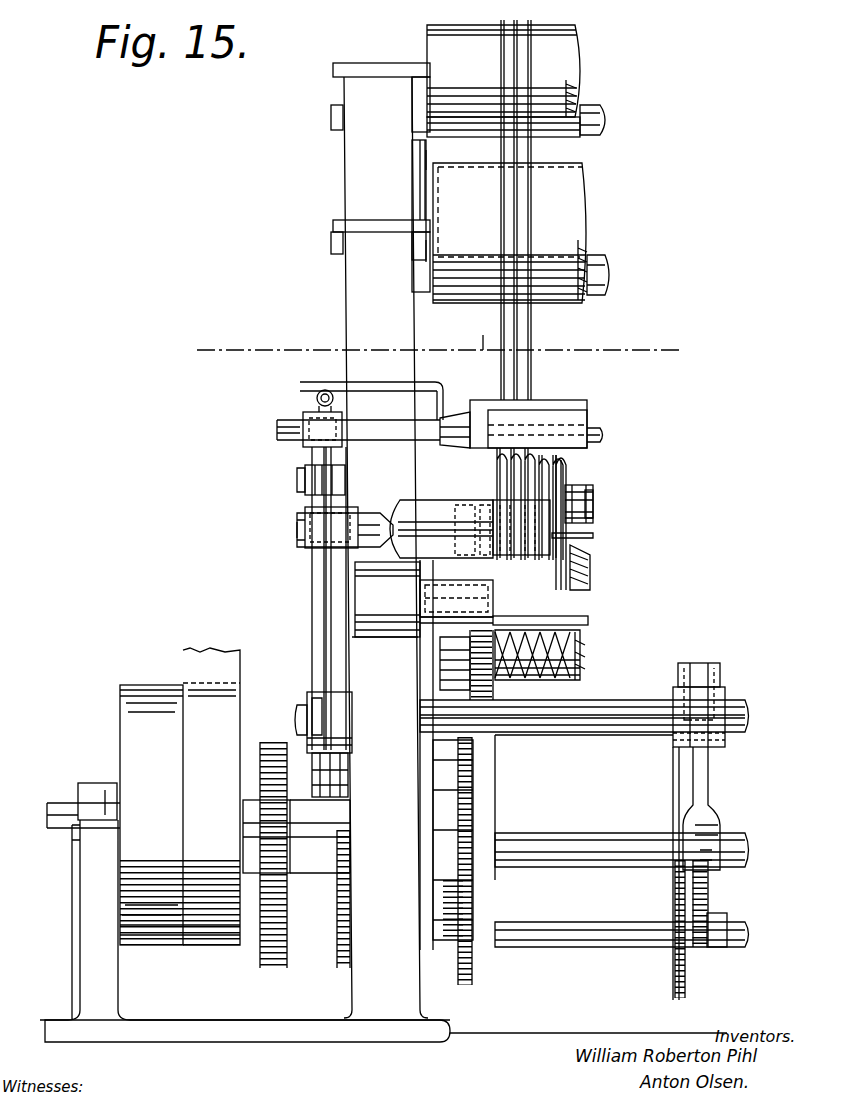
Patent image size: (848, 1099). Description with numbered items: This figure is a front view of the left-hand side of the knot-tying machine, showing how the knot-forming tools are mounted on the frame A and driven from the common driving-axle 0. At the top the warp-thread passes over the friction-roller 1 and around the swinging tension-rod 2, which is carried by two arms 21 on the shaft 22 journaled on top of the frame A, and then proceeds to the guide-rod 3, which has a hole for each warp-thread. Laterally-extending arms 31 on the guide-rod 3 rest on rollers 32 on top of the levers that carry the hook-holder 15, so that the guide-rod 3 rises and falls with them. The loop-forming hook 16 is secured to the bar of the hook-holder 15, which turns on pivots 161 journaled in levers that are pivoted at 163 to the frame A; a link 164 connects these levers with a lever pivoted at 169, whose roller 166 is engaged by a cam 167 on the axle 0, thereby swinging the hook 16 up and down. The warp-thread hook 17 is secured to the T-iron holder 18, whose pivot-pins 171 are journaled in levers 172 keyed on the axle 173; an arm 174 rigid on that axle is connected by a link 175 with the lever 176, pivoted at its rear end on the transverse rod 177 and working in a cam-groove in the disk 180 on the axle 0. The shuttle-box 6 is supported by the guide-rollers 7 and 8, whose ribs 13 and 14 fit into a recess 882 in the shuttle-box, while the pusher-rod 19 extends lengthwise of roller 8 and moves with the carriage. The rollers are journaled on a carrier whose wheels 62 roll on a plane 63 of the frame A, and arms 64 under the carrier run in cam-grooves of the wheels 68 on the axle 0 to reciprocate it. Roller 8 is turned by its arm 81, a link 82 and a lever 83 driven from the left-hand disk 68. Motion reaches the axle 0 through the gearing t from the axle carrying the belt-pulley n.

The frame A is at (350, 318).
The friction-roller 1 is at (578, 203).
The tension-rod 2 is at (606, 262).
The guide-rod 3 is at (603, 435).
The shuttle-box 6 is at (568, 470).
The shuttle-box guide-roller 7 is at (594, 508).
The shuttle-box guide-roller 8 is at (580, 604).
The rib 13 is at (592, 492).
The rib 14 is at (496, 552).
The hook-holder 15 is at (560, 398).
The loop-forming hook 16 is at (497, 462).
The warp-thread hook 17 is at (497, 475).
The holder (T-iron) 18 is at (402, 505).
The pusher-rod 19 is at (594, 536).
The arm 21 is at (420, 165).
The shaft 22 is at (588, 132).
The laterally-extending arm 31 is at (430, 385).
The roller 32 is at (316, 398).
The wheel 62 is at (387, 599).
The plane 63 is at (380, 638).
The arm 64 is at (496, 766).
The wheel (cam-disk) 68 is at (474, 972).
The arm 81 is at (456, 601).
The link 82 is at (428, 783).
The lever 83 is at (432, 905).
The pivot 161 is at (278, 428).
The pivot 163 is at (298, 478).
The link 164 is at (312, 592).
The roller 166 is at (342, 765).
The cam 167 is at (340, 970).
The pivot 169 is at (315, 770).
The pivot-pin 171 is at (298, 527).
The lever 172 is at (328, 638).
The axle 173 is at (583, 708).
The arm 174 is at (700, 668).
The link 175 is at (710, 775).
The lever 176 is at (710, 894).
The transverse rod 177 is at (562, 948).
The disk 180 is at (675, 895).
The recess 882 is at (572, 572).
The driving-axle 0 is at (575, 840).
The belt-pulley n is at (183, 947).
The gearing t is at (262, 965).